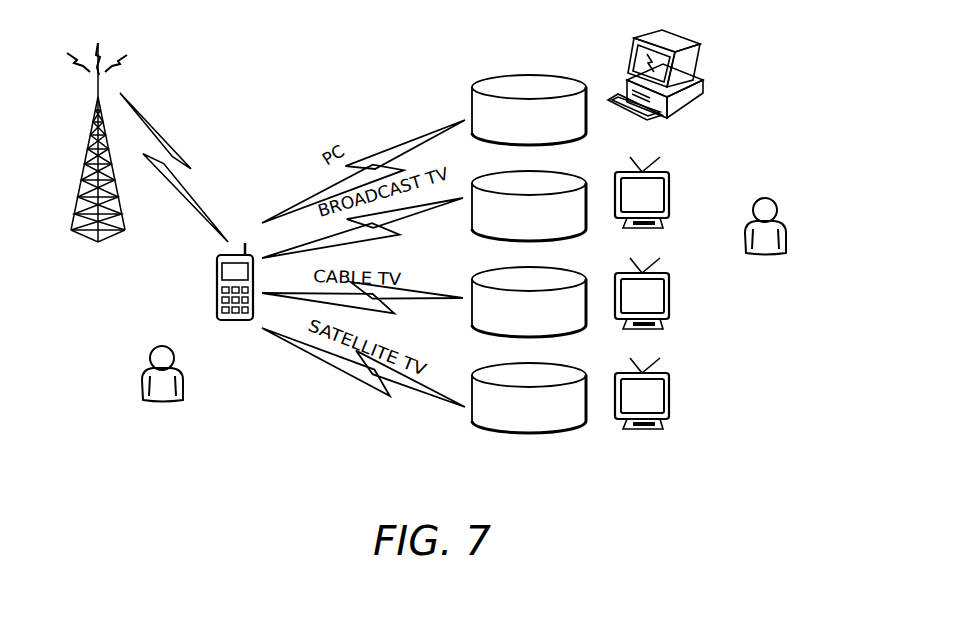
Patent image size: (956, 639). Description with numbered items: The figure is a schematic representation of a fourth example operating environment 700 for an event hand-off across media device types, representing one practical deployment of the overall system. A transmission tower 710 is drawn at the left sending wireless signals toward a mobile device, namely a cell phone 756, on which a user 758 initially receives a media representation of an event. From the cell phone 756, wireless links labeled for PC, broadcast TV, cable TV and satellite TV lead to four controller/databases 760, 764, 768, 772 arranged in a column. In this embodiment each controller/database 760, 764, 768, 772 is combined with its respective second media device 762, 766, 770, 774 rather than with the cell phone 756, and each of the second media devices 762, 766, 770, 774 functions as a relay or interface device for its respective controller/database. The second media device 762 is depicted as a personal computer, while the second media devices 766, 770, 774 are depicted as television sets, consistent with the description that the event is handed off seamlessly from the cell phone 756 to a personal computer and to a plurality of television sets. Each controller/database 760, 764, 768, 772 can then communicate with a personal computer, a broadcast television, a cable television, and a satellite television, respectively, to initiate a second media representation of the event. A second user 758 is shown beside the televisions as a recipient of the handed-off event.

The operating environment 700 is at (761, 488).
The transmission tower 710 is at (86, 149).
The cell phone 756 is at (216, 285).
The user 758 is at (143, 370).
The controller/database 760 is at (491, 76).
The second media device 762 is at (688, 48).
The controller/database 764 is at (491, 172).
The second media device 766 is at (671, 193).
The controller/database 768 is at (491, 268).
The second media device 770 is at (671, 294).
The controller/database 772 is at (491, 364).
The second media device 774 is at (671, 394).